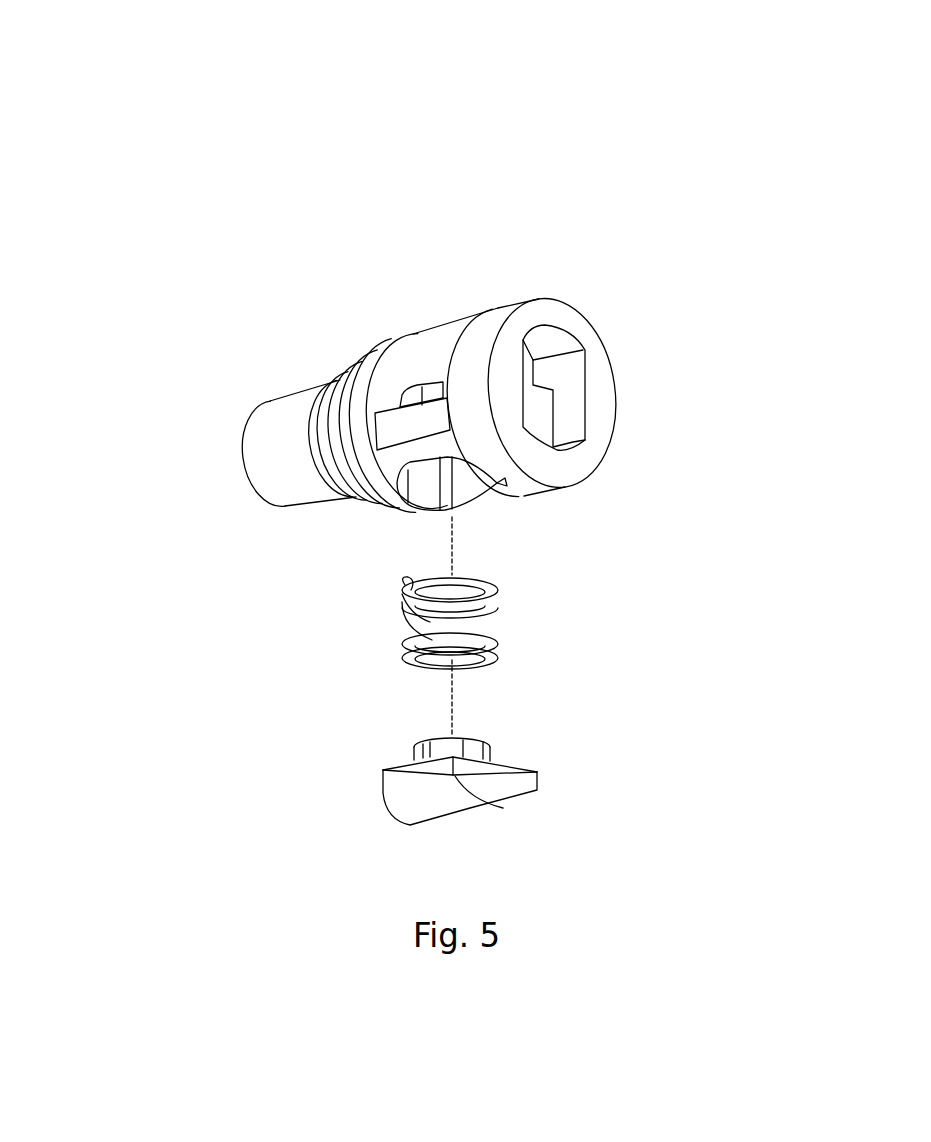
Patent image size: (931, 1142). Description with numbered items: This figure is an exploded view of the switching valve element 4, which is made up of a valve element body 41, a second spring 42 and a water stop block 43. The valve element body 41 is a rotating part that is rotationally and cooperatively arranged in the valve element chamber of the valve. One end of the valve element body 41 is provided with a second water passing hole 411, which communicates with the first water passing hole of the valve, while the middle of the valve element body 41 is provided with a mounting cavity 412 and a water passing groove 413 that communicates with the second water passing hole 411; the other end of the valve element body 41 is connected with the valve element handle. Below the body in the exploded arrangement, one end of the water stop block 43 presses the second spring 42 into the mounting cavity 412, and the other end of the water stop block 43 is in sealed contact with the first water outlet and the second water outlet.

The switching valve element 4 is at (628, 170).
The valve element body 41 is at (283, 438).
The second water passing hole 411 is at (560, 370).
The mounting cavity 412 is at (460, 487).
The water passing groove 413 is at (432, 343).
The second spring 42 is at (407, 617).
The water stop block 43 is at (427, 797).